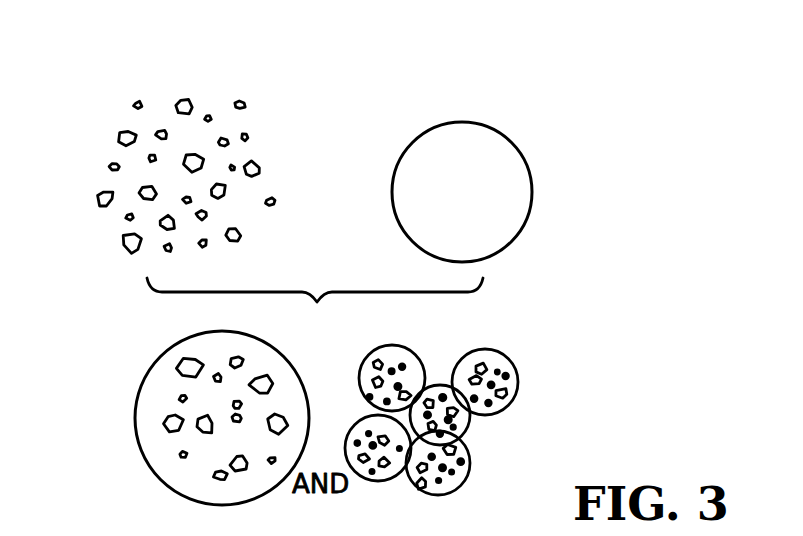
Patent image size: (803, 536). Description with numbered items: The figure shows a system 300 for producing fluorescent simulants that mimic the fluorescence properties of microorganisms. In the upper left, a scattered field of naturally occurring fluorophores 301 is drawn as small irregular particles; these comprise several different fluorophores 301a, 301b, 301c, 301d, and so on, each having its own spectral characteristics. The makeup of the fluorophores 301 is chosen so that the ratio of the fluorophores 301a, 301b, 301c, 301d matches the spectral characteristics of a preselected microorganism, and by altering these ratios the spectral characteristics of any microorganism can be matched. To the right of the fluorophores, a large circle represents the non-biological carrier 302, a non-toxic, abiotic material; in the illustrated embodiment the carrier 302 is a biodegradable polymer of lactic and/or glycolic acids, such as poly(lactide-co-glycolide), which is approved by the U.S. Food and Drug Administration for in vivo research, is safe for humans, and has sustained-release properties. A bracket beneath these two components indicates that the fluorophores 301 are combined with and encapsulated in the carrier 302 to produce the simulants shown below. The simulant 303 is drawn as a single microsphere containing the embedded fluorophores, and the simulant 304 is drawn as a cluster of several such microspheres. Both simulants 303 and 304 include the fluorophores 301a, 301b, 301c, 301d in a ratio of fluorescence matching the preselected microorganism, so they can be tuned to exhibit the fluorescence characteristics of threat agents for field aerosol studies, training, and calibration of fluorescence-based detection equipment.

The system 300 is at (390, 56).
The naturally occurring fluorophores 301 is at (140, 78).
The fluorophore 301a is at (247, 104).
The fluorophore 301b is at (266, 158).
The fluorophore 301c is at (235, 195).
The fluorophore 301d is at (243, 230).
The non-biological carrier 302 is at (490, 198).
The simulant 303 is at (143, 375).
The simulant 304 is at (424, 368).